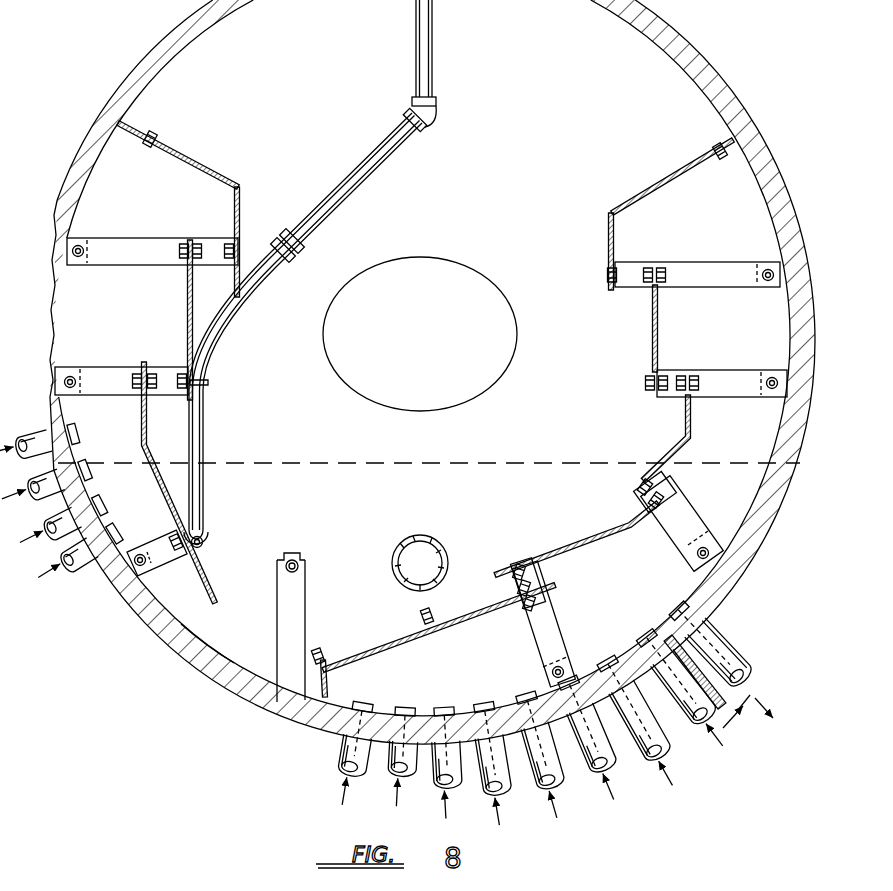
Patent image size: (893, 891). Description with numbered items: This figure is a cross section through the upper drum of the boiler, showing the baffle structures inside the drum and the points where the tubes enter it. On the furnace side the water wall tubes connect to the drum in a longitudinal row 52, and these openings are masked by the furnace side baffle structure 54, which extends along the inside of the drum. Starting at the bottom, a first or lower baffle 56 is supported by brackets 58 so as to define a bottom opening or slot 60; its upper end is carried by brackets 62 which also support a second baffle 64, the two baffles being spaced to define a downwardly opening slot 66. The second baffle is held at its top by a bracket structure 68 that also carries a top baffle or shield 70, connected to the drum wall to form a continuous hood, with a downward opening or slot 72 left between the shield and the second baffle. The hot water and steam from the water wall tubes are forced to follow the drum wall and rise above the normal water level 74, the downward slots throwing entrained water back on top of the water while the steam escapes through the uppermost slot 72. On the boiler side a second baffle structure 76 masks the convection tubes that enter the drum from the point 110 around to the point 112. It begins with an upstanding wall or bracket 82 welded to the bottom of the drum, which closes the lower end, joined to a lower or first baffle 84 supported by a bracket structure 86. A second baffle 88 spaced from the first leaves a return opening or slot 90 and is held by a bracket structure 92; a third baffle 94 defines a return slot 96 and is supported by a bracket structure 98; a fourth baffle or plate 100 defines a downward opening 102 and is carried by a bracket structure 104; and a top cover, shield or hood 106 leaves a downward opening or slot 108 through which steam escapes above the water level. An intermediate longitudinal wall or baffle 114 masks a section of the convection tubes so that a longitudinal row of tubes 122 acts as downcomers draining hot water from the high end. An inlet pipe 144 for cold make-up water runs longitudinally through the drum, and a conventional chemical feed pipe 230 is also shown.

The longitudinal row of water wall tube connections 52 is at (78, 441).
The furnace side baffle structure 54 is at (199, 145).
The first or lower baffle 56 is at (166, 493).
The brackets 58 is at (167, 558).
The bottom opening or slot 60 is at (198, 623).
The brackets 62 is at (118, 372).
The second baffle 64 is at (188, 300).
The downwardly opening slot 66 is at (169, 375).
The bracket structure 68 is at (133, 252).
The top baffle or shield 70 is at (217, 172).
The downward opening or slot 72 is at (213, 251).
The normal water level 74 is at (320, 462).
The second baffle structure 76 is at (682, 310).
The upstanding wall or bracket 82 is at (310, 701).
The lower or first baffle 84 is at (395, 644).
The bracket structure 86 is at (551, 638).
The second baffle 88 is at (568, 546).
The return opening or slot 90 is at (546, 577).
The bracket structure 92 is at (681, 522).
The third baffle 94 is at (687, 415).
The return slot 96 is at (663, 480).
The bracket structure 98 is at (733, 377).
The fourth baffle or plate 100 is at (653, 334).
The downward opening 102 is at (676, 370).
The bracket structure 104 is at (711, 267).
The top cover, shield or hood 106 is at (628, 200).
The downward opening or slot 108 is at (635, 262).
The point where convection tubes enter 110 is at (343, 740).
The point where convection tubes enter 112 is at (632, 646).
The intermediate longitudinal wall or baffle 114 is at (727, 703).
The longitudinal row of downcomer tubes 122 is at (708, 630).
The inlet pipe 144 is at (429, 552).
The chemical feed pipe 230 is at (294, 557).